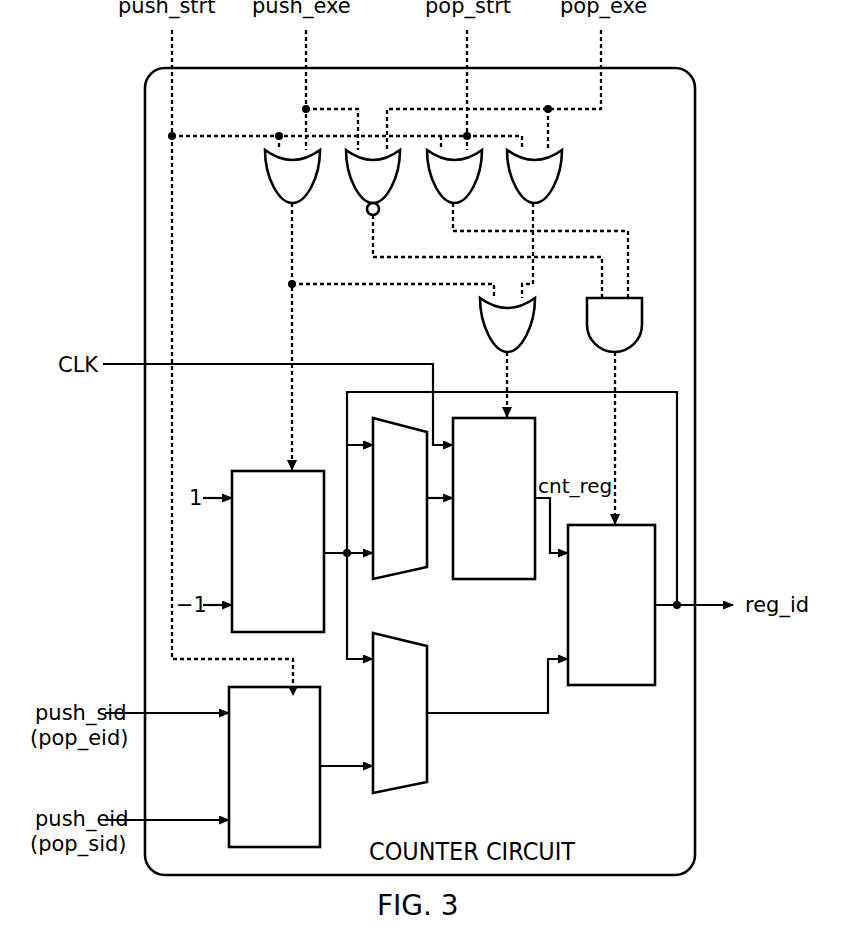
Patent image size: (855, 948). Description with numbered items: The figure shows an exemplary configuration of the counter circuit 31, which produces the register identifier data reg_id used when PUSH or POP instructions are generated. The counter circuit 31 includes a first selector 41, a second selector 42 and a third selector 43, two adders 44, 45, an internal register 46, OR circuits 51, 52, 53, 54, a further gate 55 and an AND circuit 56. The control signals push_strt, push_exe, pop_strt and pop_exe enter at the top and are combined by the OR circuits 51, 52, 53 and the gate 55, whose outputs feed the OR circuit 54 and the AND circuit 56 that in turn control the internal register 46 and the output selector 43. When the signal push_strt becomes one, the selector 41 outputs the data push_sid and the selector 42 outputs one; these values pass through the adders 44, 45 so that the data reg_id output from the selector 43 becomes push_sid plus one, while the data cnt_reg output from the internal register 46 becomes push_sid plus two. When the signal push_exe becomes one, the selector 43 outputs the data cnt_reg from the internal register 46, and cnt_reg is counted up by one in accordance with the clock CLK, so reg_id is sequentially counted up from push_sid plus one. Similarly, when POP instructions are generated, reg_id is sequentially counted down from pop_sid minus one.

The counter circuit 31 is at (695, 135).
The selector 41 is at (229, 738).
The selector 42 is at (232, 535).
The selector 43 is at (615, 685).
The adder 44 is at (404, 572).
The adder 45 is at (403, 786).
The internal register 46 is at (535, 445).
The OR circuit 51 is at (300, 203).
The OR circuit 52 is at (462, 203).
The OR circuit 53 is at (542, 203).
The OR circuit 54 is at (516, 352).
The NOR circuit 55 is at (381, 203).
The AND circuit 56 is at (626, 350).